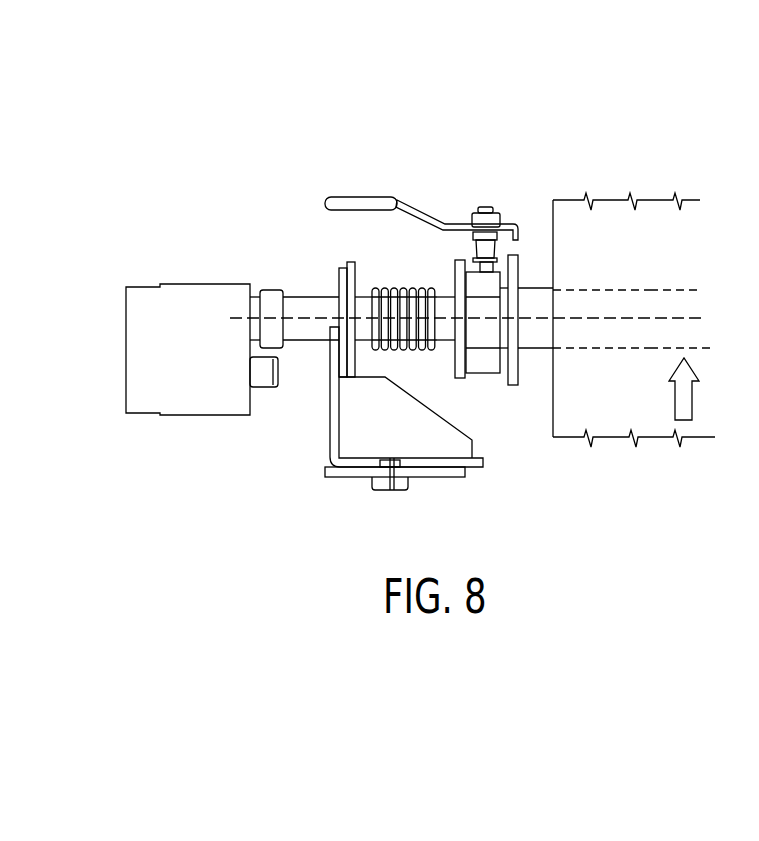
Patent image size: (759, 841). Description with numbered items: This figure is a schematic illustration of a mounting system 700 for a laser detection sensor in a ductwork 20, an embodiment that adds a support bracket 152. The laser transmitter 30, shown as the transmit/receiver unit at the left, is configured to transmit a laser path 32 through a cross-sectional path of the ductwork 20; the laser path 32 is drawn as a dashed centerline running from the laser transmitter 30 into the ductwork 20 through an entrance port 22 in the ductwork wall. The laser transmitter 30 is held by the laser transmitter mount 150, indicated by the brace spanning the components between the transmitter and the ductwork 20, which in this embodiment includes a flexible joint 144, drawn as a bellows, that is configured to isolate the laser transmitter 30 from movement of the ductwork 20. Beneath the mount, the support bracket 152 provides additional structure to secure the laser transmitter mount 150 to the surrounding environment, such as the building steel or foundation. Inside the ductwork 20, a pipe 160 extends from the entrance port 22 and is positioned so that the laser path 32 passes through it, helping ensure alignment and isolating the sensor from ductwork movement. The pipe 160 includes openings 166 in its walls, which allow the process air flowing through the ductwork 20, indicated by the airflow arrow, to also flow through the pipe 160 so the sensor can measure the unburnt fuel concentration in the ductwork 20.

The mounting system 700 is at (553, 122).
The laser transmitter mount 150 is at (530, 158).
The flexible joint 144 is at (379, 287).
The support bracket 152 is at (447, 477).
The laser transmitter 30 is at (211, 417).
The entrance port 22 is at (553, 292).
The ductwork 20 is at (702, 427).
The pipe 160 is at (608, 287).
The openings 166 is at (683, 287).
The laser path 32 is at (688, 318).